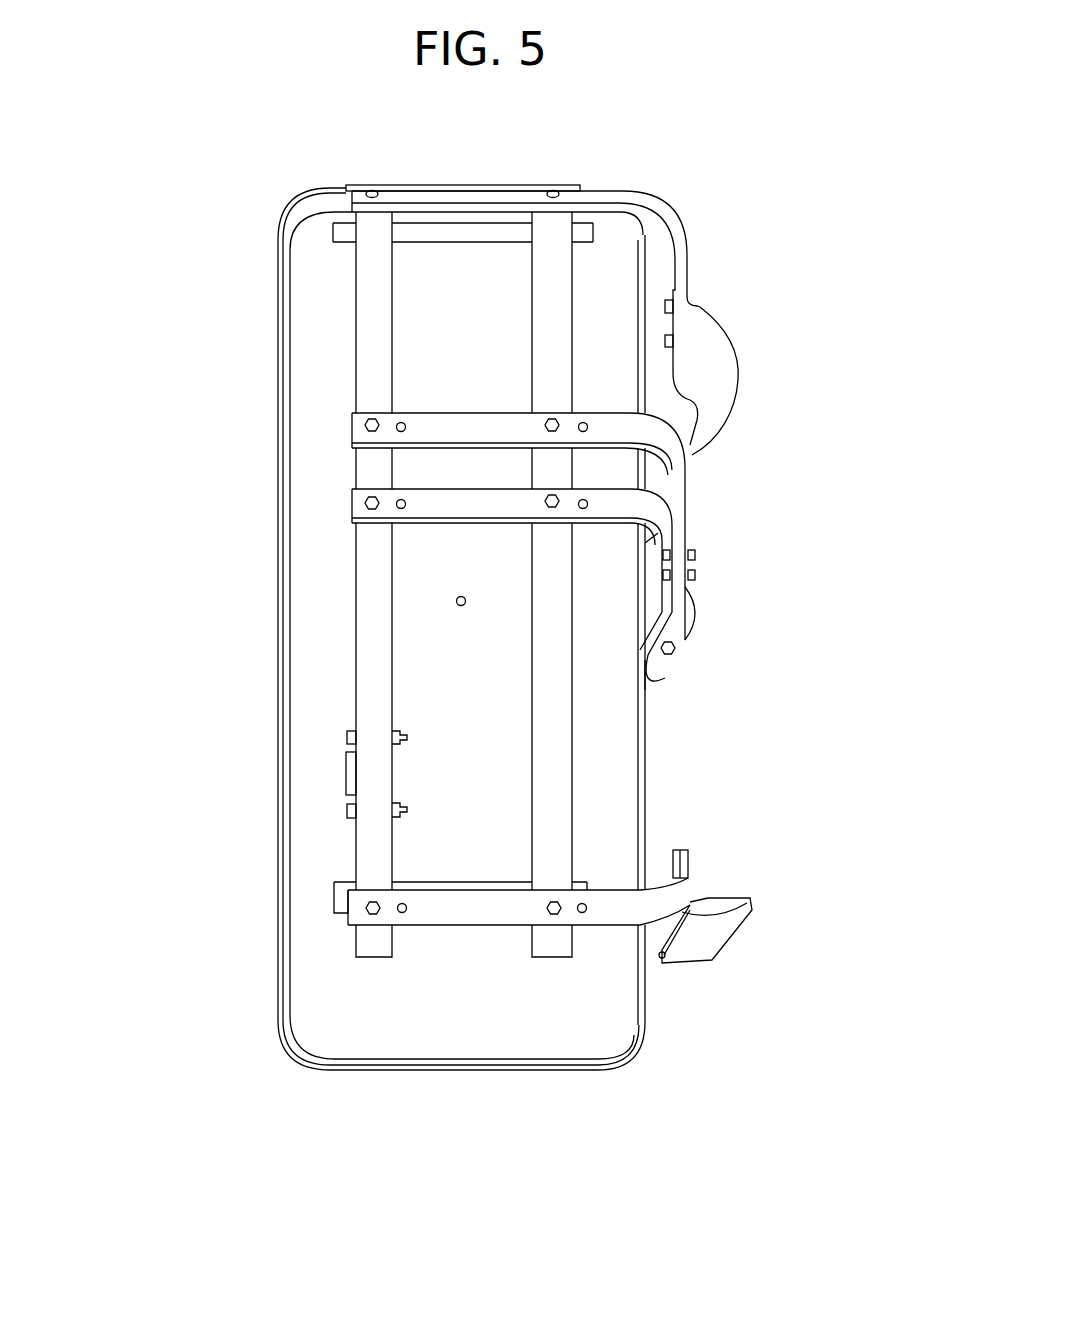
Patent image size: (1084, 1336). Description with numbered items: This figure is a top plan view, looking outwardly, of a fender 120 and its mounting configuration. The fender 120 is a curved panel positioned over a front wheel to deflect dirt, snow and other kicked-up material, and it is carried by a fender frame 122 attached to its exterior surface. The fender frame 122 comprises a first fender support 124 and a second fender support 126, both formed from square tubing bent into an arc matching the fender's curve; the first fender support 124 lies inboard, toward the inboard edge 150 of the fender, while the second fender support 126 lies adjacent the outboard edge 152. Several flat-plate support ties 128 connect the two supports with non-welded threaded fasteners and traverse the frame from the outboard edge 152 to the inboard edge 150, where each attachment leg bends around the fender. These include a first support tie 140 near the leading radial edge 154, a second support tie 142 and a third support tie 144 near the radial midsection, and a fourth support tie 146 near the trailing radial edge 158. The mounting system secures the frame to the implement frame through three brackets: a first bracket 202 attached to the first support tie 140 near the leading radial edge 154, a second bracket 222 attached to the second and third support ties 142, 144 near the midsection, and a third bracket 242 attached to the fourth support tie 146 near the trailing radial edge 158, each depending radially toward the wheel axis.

The fender 120 is at (487, 659).
The fender frame 122 is at (345, 297).
The first fender support 124 is at (572, 275).
The second fender support 126 is at (355, 578).
The support tie 128 is at (492, 621).
The first support tie 140 is at (358, 912).
The second support tie 142 is at (473, 527).
The third support tie 144 is at (358, 428).
The fourth support tie 146 is at (452, 185).
The inboard edge 150 is at (645, 810).
The outboard edge 152 is at (280, 970).
The leading radial edge 154 is at (458, 470).
The trailing radial edge 158 is at (323, 187).
The first bracket 202 is at (733, 940).
The second bracket 222 is at (687, 638).
The third bracket 242 is at (737, 350).